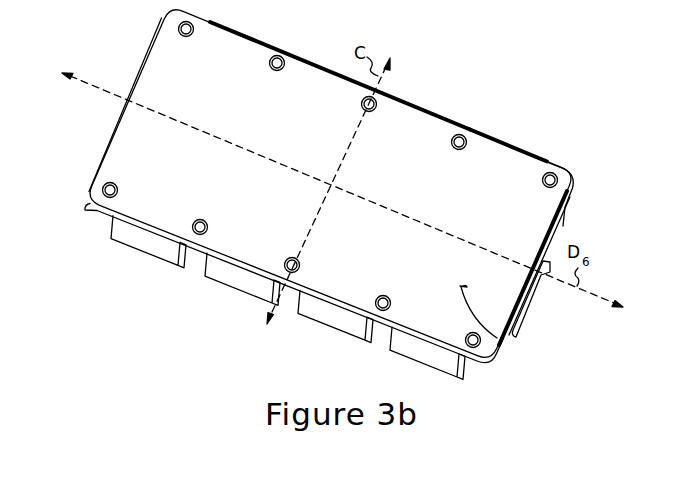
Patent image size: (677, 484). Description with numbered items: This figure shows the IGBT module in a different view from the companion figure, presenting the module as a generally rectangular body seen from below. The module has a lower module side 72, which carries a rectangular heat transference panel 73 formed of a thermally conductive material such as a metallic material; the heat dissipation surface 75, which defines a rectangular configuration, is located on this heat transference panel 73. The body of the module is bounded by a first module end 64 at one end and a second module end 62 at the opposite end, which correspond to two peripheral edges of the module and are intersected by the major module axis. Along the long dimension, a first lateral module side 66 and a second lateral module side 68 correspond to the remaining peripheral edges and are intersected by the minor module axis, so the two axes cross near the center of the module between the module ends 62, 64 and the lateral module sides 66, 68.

The second module end 62 is at (573, 193).
The first module end 64 is at (110, 135).
The first lateral module side 66 is at (423, 105).
The second lateral module side 68 is at (327, 324).
The lower module side 72 is at (516, 152).
The heat transference panel 73 is at (548, 160).
The heat dissipation surface 75 is at (511, 335).